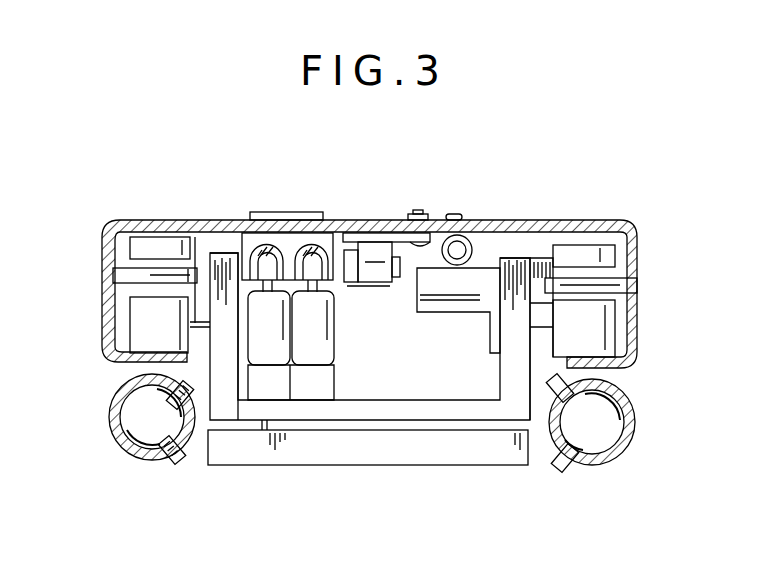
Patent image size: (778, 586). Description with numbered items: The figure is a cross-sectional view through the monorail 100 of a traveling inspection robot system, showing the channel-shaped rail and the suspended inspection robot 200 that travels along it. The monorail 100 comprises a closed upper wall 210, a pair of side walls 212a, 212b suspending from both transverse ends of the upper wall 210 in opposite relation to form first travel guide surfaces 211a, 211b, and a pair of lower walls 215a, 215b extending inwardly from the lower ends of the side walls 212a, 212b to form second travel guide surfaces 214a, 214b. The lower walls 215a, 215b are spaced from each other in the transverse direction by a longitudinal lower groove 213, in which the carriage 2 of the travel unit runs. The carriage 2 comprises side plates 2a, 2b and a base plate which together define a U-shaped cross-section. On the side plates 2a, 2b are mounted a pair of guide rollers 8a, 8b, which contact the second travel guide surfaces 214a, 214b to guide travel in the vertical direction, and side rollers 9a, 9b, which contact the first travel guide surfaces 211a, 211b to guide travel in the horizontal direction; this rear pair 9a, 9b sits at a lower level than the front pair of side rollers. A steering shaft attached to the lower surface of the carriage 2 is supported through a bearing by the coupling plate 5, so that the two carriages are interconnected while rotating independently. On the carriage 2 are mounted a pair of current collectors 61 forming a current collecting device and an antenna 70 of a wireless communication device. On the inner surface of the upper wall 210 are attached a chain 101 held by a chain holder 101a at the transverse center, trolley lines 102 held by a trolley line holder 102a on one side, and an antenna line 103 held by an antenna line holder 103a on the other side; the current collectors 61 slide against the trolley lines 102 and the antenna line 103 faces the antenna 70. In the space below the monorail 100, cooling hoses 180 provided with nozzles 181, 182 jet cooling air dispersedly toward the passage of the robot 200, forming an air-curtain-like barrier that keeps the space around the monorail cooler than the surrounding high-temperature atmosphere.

The carriage 2 is at (365, 418).
The side plate 2a is at (225, 265).
The side plate 2b is at (513, 282).
The coupling plate 5 is at (448, 450).
The guide roller 8a is at (143, 246).
The guide roller 8b is at (600, 256).
The side roller 9a is at (128, 280).
The side roller 9b is at (632, 293).
The current collectors 61 is at (268, 348).
The antenna 70 is at (462, 290).
The monorail 100 is at (647, 273).
The chain 101 is at (370, 253).
The chain holder 101a is at (416, 214).
The trolley lines 102 is at (300, 246).
The trolley line holder 102a is at (297, 218).
The antenna line 103 is at (462, 258).
The antenna line holder 103a is at (454, 216).
The cooling hoses 180 is at (118, 443).
The nozzle 181 is at (177, 462).
The nozzle 182 is at (167, 397).
The suspended inspection robot 200 is at (275, 480).
The upper wall 210 is at (590, 223).
The first travel guide surface 211a is at (118, 306).
The first travel guide surface 211b is at (622, 318).
The side wall 212a is at (110, 253).
The side wall 212b is at (628, 340).
The longitudinal lower groove 213 is at (541, 363).
The second travel guide surface 214a is at (110, 353).
The second travel guide surface 214b is at (632, 360).
The lower wall 215a is at (147, 362).
The lower wall 215b is at (612, 362).